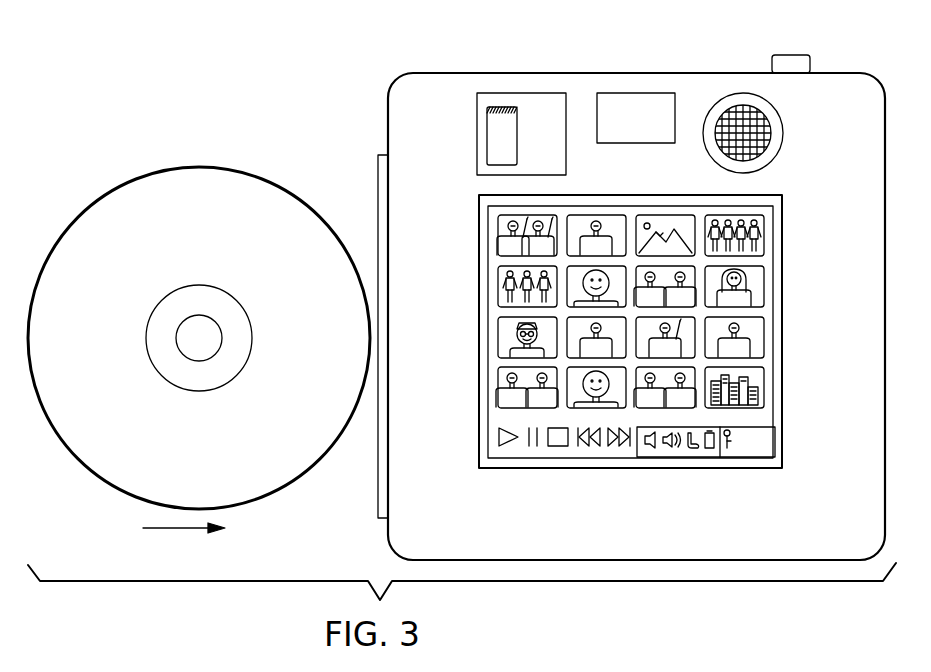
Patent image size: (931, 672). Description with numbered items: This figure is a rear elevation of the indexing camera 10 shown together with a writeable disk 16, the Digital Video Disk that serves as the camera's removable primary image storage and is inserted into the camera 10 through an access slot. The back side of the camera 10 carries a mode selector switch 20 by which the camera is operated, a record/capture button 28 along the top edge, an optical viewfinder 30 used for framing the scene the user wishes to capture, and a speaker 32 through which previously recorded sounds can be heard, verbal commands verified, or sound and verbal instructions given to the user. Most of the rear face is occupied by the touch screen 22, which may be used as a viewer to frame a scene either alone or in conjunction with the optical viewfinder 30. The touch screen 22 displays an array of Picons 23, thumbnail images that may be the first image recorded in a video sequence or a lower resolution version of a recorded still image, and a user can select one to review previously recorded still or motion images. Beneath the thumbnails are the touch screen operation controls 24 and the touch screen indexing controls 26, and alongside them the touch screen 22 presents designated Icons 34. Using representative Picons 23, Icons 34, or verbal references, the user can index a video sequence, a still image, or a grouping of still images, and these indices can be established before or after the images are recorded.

The indexing camera 10 is at (388, 532).
The disk 16 is at (252, 182).
The mode selector switch 20 is at (490, 107).
The touch screen 22 is at (481, 212).
The Picon 23 is at (505, 249).
The touch screen operation controls 24 is at (530, 447).
The touch screen indexing controls 26 is at (600, 447).
The record/capture button 28 is at (772, 62).
The optical viewfinder 30 is at (635, 135).
The speaker 32 is at (756, 147).
The Icon 34 is at (712, 447).